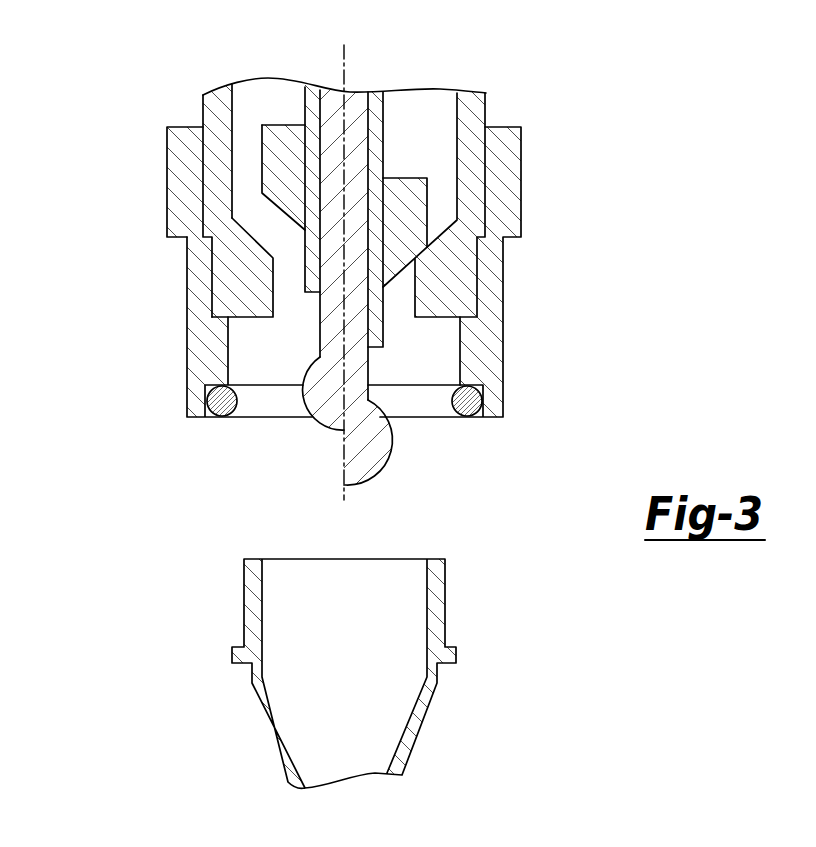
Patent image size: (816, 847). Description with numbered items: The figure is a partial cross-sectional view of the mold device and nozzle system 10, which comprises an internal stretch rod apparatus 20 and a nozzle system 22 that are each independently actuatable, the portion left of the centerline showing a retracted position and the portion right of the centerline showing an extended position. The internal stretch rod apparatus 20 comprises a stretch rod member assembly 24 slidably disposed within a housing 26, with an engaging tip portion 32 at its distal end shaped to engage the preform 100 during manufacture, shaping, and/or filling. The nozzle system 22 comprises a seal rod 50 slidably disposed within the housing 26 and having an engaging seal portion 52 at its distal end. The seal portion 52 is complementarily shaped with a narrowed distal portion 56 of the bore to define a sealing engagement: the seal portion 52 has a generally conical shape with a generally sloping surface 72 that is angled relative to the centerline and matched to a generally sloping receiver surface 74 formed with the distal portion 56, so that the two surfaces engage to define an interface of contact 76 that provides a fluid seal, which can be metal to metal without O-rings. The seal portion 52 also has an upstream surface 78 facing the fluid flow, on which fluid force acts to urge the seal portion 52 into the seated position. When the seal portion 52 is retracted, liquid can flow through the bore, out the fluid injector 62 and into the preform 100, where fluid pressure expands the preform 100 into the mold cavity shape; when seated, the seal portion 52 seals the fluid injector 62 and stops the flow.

The mold device and nozzle system 10 is at (540, 90).
The internal stretch rod apparatus 20 is at (390, 435).
The nozzle system 22 is at (157, 90).
The stretch rod member assembly 24 is at (309, 340).
The housing 26 is at (167, 218).
The engaging tip portion 32 is at (318, 422).
The seal rod 50 is at (384, 108).
The seal portion 52 is at (282, 140).
The narrowed distal portion 56 is at (238, 298).
The fluid injector 62 is at (400, 333).
The generally sloping surface 72 is at (272, 210).
The generally sloping receiver surface 74 is at (262, 232).
The interface of contact 76 is at (415, 253).
The upstream surface 78 is at (296, 123).
The preform 100 is at (437, 687).